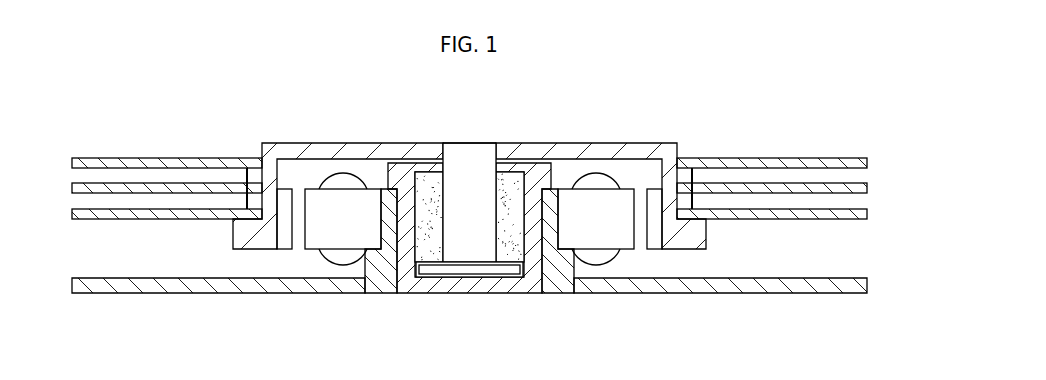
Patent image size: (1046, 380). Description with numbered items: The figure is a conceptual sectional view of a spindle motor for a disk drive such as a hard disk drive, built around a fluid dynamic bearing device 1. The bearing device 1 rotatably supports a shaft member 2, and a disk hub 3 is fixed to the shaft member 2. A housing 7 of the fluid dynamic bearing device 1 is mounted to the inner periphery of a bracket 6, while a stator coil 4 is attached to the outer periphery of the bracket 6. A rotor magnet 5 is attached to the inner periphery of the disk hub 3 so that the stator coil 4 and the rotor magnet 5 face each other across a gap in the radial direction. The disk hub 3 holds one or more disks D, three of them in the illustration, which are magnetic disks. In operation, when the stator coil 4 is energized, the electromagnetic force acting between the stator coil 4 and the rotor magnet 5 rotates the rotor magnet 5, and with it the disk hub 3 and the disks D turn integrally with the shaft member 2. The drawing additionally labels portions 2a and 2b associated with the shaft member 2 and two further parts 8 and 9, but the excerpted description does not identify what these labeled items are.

The fluid dynamic bearing device 1 is at (439, 293).
The shaft member 2 is at (478, 143).
The pin top end 2a is at (463, 160).
The pin bottom flange 2b is at (472, 272).
The disk hub 3 is at (649, 153).
The stator coil 4 is at (627, 243).
The rotor magnet 5 is at (654, 252).
The bracket 6 is at (562, 284).
The housing 7 is at (503, 284).
The permanent magnet 8 is at (510, 177).
The housing cover 9 is at (431, 157).
The disks D is at (797, 240).